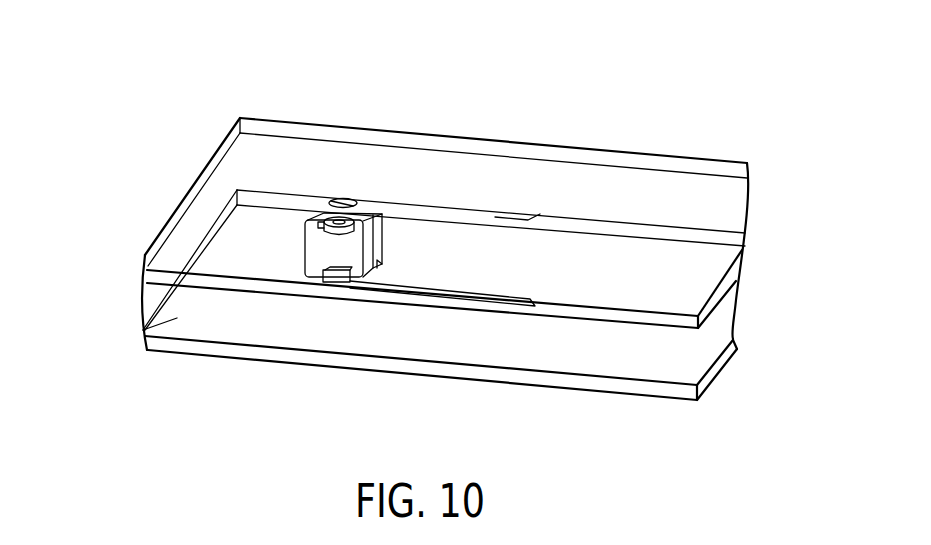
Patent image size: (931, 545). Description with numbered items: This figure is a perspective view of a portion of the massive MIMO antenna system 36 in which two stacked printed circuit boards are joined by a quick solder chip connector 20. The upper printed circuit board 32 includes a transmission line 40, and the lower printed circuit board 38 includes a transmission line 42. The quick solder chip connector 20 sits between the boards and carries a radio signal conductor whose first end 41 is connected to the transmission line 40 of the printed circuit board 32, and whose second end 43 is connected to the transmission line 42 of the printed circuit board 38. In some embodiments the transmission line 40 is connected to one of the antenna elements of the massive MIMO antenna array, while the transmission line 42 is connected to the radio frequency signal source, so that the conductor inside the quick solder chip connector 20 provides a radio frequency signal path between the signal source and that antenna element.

The quick solder chip connector 20 is at (300, 285).
The printed circuit board 32 is at (230, 167).
The massive MIMO antenna system 36 is at (418, 218).
The printed circuit board 38 is at (146, 331).
The transmission line 40 is at (495, 218).
The first end 41 is at (326, 208).
The transmission line 42 is at (445, 303).
The second end 43 is at (322, 287).